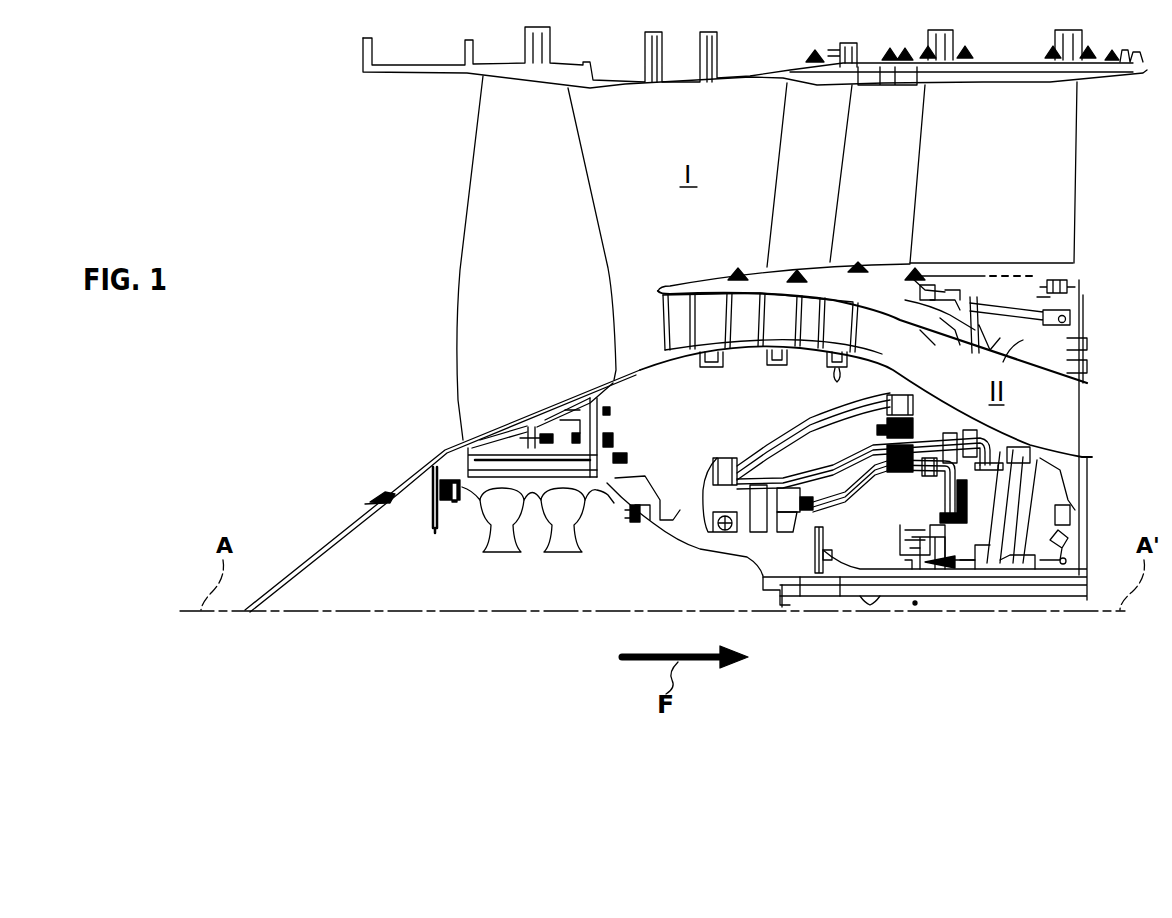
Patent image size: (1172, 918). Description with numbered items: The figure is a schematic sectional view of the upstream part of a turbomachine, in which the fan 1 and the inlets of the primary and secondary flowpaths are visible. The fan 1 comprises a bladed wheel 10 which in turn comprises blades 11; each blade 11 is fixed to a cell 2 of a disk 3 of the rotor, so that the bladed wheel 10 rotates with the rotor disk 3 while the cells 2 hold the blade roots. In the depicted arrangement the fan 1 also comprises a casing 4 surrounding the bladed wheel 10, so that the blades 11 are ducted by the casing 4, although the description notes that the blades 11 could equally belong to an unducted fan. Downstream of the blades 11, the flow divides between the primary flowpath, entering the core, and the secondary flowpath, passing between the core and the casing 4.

The fan 1 is at (316, 174).
The cell 2 is at (606, 484).
The disk 3 is at (615, 470).
The casing 4 is at (500, 70).
The bladed wheel 10 is at (447, 177).
The blades 11 is at (450, 276).